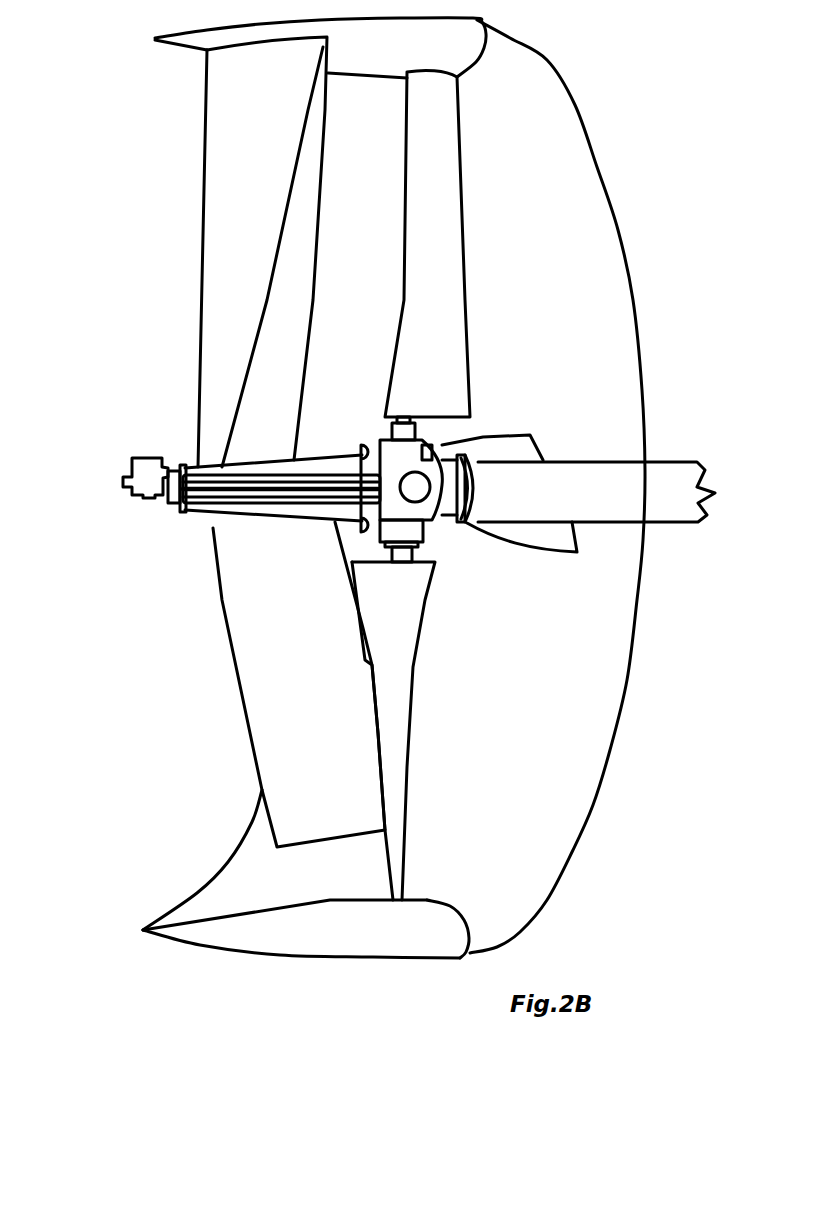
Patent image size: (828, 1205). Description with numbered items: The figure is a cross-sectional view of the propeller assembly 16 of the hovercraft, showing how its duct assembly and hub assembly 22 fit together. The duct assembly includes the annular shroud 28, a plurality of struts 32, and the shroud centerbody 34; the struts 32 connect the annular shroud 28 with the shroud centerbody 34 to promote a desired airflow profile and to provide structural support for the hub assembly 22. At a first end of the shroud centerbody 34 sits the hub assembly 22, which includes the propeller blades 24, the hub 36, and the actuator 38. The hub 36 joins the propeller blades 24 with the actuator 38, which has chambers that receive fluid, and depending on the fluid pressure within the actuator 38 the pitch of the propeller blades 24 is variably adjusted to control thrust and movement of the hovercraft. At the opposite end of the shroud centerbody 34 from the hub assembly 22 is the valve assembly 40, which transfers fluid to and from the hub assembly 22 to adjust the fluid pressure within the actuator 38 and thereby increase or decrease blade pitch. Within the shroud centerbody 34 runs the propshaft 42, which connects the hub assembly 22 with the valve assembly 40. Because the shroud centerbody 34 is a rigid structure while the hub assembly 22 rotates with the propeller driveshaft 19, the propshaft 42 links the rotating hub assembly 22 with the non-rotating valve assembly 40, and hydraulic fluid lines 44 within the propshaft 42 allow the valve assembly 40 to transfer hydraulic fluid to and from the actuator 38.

The propeller assembly 16 is at (650, 184).
The propeller driveshaft 19 is at (663, 492).
The hub assembly 22 is at (447, 450).
The propeller blades 24 is at (452, 292).
The annular shroud 28 is at (533, 103).
The struts 32 is at (297, 178).
The shroud centerbody 34 is at (287, 462).
The hub 36 is at (400, 513).
The actuator 38 is at (445, 507).
The valve assembly 40 is at (128, 489).
The propshaft 42 is at (262, 477).
The hydraulic fluid lines 44 is at (257, 482).